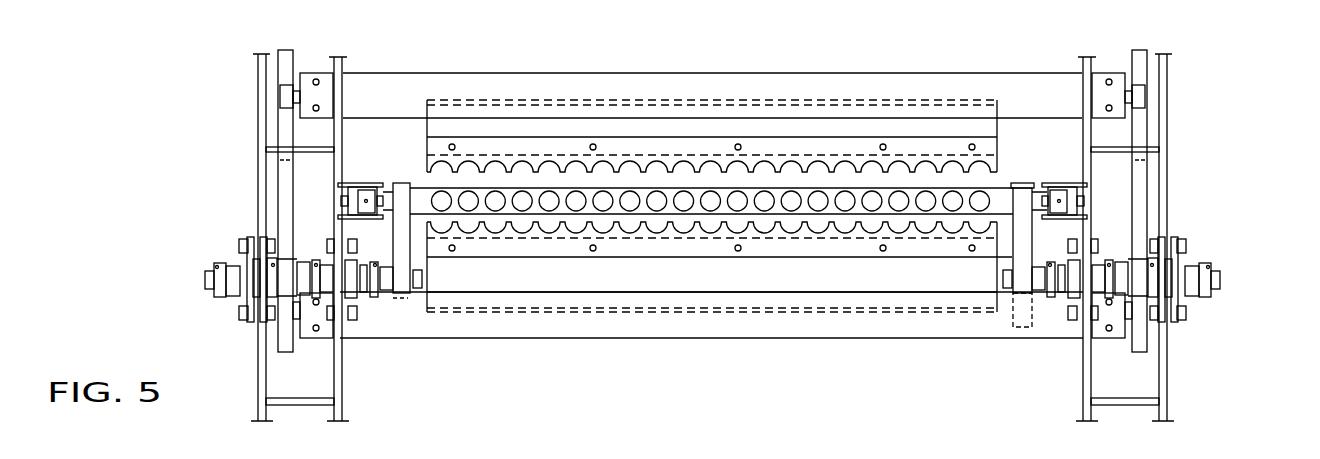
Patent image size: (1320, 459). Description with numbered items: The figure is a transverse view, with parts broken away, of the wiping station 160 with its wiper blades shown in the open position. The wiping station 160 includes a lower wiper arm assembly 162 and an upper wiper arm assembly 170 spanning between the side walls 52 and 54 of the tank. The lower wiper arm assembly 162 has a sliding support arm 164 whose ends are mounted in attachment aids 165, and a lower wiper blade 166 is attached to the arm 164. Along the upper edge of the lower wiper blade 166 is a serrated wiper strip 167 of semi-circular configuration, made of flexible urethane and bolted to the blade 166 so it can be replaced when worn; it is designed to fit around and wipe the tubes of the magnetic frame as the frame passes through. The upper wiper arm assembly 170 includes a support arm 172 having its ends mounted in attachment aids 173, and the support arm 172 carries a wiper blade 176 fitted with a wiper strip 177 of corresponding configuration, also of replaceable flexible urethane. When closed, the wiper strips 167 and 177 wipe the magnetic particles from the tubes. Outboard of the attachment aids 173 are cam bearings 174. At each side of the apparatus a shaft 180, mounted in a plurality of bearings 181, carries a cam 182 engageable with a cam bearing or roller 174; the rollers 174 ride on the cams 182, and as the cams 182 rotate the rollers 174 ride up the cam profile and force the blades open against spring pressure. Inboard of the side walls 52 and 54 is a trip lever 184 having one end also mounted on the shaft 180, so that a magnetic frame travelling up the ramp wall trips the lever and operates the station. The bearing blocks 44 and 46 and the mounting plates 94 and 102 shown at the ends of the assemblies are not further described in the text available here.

The bearing block 44 is at (1055, 210).
The bearing block 46 is at (365, 193).
The side wall 52 is at (1082, 388).
The side wall 54 is at (342, 378).
The mounting plate 94 is at (365, 222).
The mounting plate 102 is at (1060, 182).
The wiping station 160 is at (678, 409).
The lower wiper arm assembly 162 is at (757, 325).
The sliding support arm 164 is at (495, 330).
The attachment aids 165 is at (316, 340).
The lower wiper blade 166 is at (867, 273).
The serrated wiper strip 167 is at (572, 248).
The upper wiper arm assembly 170 is at (587, 84).
The support arm 172 is at (403, 90).
The attachment aids 173 is at (312, 73).
The cam bearings 174 is at (282, 96).
The wiper blade 176 is at (662, 140).
The wiper strip 177 is at (807, 145).
The shaft 180 is at (205, 277).
The bearings 181 is at (316, 264).
The cam 182 is at (287, 172).
The trip lever 184 is at (1012, 247).